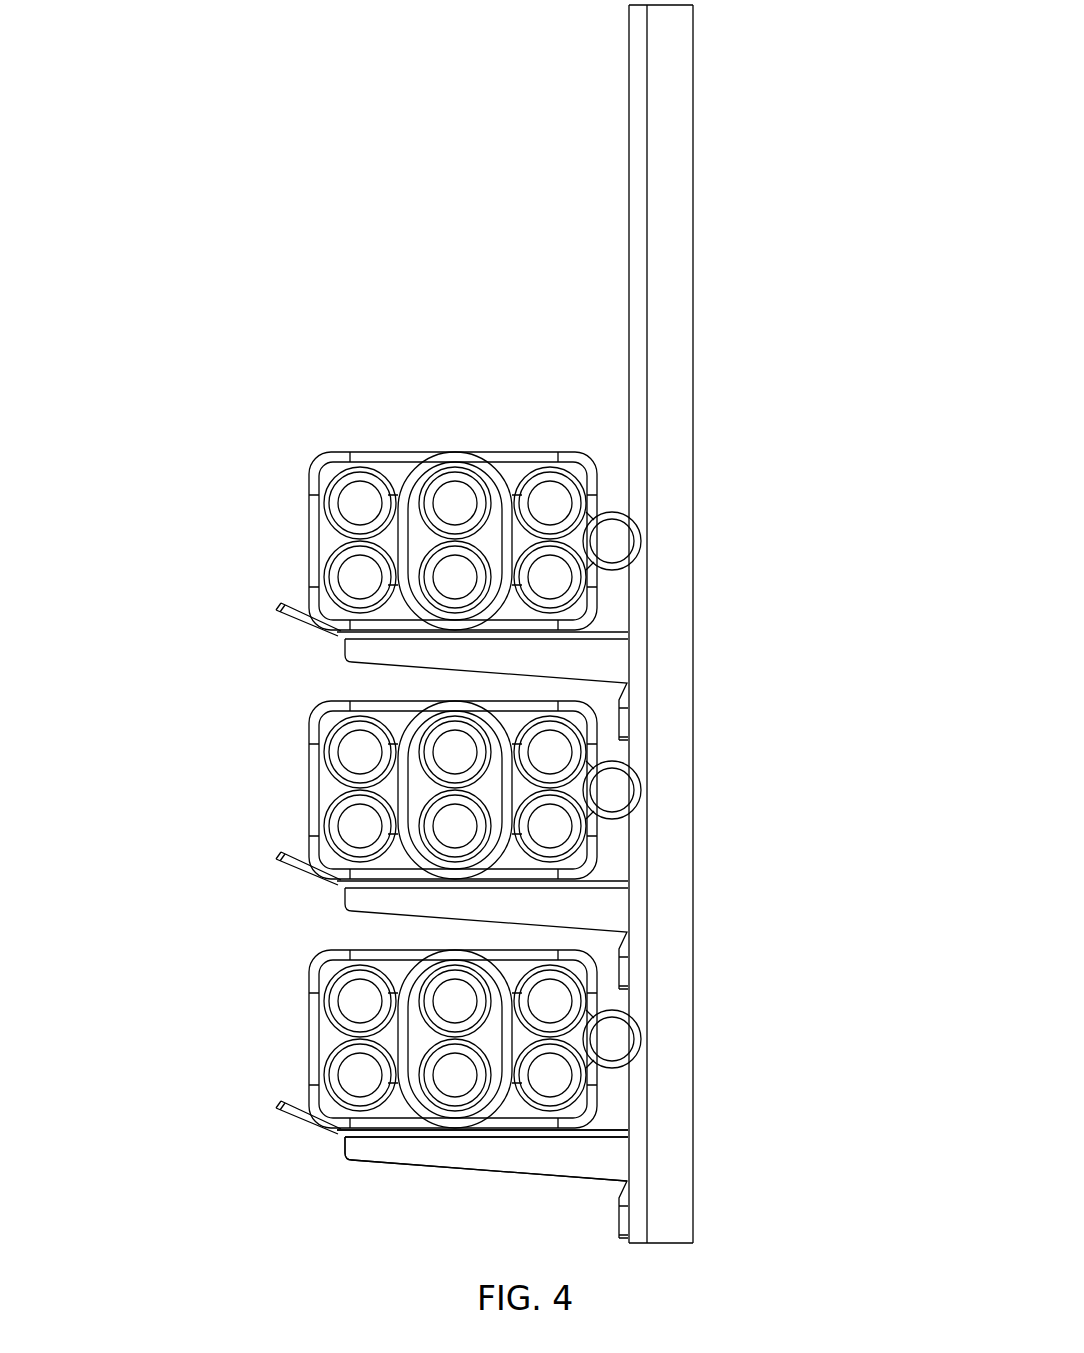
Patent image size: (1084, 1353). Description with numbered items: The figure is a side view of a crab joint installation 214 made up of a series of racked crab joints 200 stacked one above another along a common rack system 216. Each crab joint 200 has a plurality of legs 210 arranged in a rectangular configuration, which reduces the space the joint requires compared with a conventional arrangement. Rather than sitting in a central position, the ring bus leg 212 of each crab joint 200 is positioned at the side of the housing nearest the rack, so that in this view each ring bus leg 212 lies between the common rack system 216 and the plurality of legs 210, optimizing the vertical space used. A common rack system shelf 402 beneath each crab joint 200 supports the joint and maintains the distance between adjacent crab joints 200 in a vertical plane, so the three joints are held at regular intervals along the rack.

The crab joint 200 is at (293, 1017).
The plurality of legs 210 is at (497, 457).
The ring bus leg 212 is at (618, 541).
The crab joint installation 214 is at (538, 310).
The common rack system 216 is at (682, 317).
The common rack system shelf 402 is at (453, 1155).